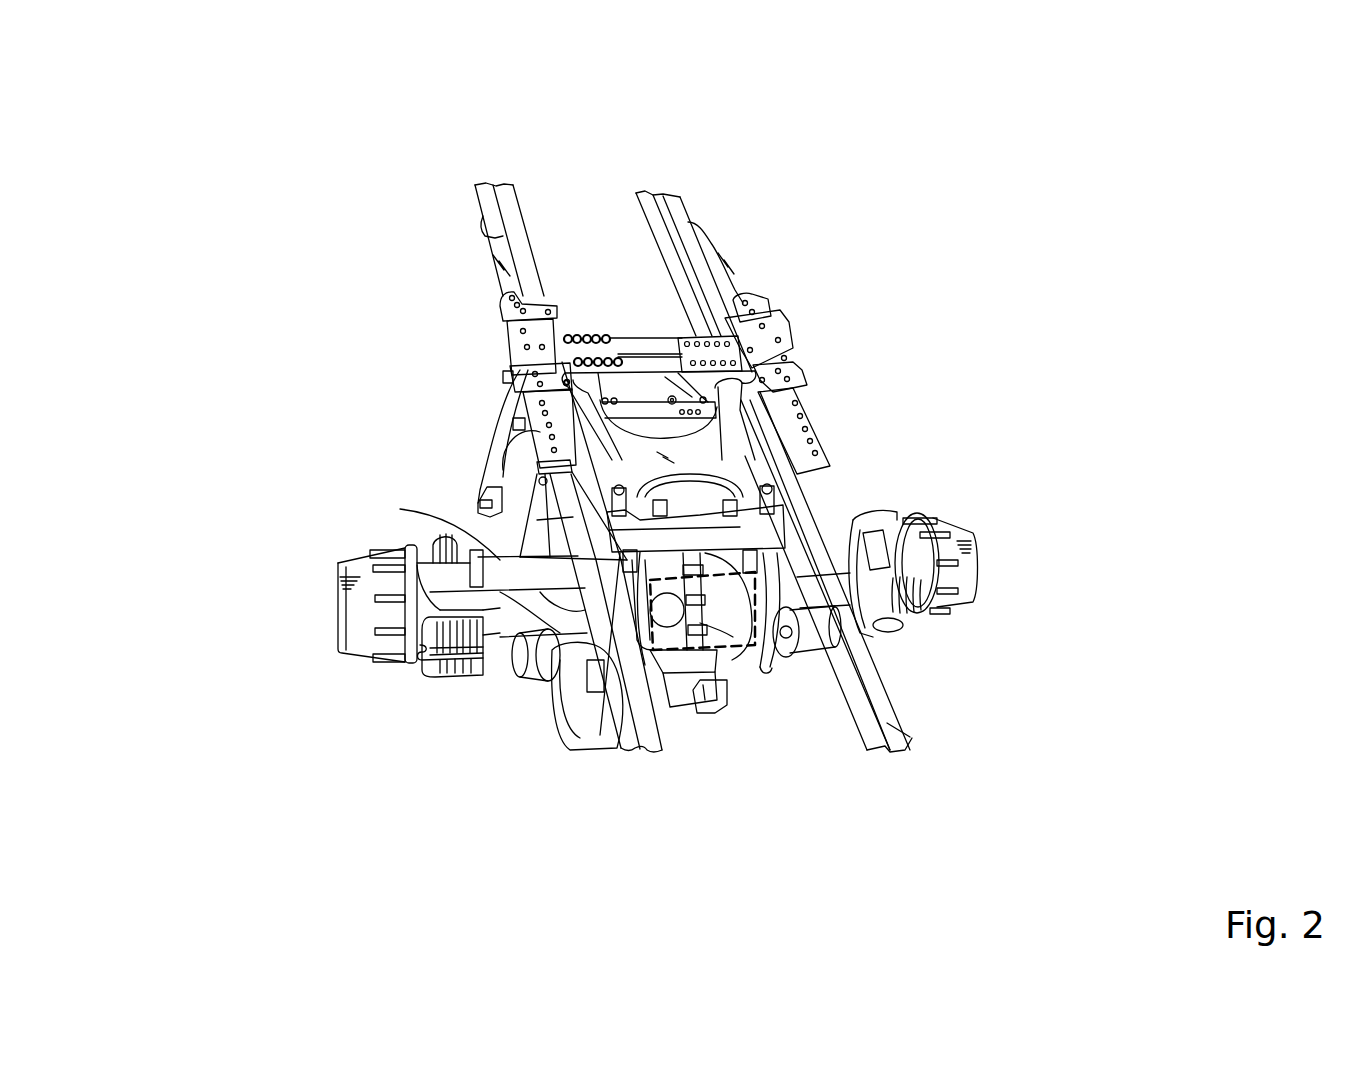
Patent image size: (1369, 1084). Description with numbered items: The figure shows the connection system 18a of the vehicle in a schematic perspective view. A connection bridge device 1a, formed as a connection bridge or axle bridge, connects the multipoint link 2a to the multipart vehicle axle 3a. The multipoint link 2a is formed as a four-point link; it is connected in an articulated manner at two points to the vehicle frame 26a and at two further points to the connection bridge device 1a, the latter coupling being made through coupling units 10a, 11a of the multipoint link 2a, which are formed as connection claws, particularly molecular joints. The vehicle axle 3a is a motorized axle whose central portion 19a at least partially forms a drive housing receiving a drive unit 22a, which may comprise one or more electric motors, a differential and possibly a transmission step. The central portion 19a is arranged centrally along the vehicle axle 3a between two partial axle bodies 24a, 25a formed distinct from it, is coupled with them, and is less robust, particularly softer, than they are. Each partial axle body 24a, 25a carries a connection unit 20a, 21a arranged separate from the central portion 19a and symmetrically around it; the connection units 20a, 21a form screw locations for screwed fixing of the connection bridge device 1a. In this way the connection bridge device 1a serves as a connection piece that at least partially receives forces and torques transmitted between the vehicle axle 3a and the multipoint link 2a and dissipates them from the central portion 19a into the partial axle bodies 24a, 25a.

The connection system 18a is at (923, 251).
The vehicle frame 26a is at (773, 423).
The multipoint link 2a is at (664, 422).
The coupling unit 10a is at (612, 508).
The coupling unit 11a is at (765, 492).
The partial axle body 24a is at (400, 509).
The partial axle body 25a is at (867, 525).
The vehicle axle 3a is at (1004, 558).
The connection unit 21a is at (773, 553).
The connection unit 20a is at (637, 562).
The drive unit 22a is at (689, 652).
The central portion 19a is at (725, 652).
The connection bridge device 1a is at (728, 566).